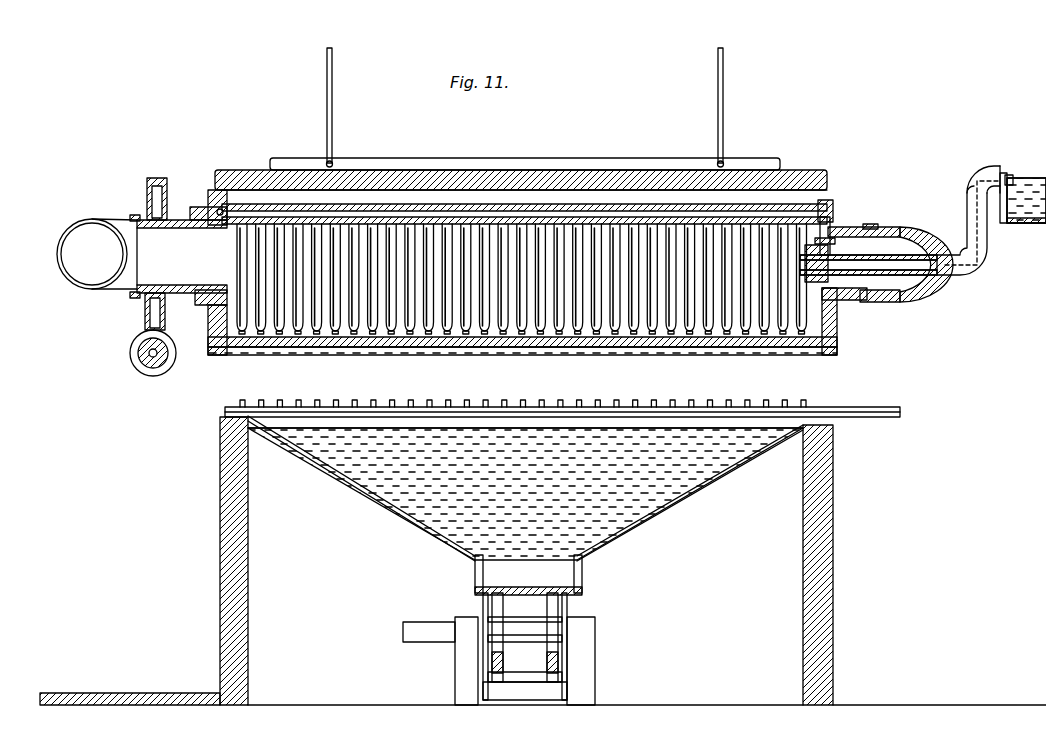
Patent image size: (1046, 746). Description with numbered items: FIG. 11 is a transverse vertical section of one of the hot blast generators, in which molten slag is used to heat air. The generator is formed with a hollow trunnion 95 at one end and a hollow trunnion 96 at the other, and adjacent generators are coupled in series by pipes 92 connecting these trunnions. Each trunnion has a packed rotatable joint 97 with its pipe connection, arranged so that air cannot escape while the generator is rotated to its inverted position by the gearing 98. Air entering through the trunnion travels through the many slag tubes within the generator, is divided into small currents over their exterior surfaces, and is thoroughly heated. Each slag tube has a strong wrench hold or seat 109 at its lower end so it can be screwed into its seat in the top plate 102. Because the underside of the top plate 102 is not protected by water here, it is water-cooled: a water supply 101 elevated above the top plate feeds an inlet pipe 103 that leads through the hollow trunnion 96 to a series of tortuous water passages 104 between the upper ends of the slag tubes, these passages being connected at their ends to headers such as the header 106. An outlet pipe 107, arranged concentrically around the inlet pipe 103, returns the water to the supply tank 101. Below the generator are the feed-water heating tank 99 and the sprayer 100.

The pipe 92 is at (925, 236).
The hollow trunnion 95 is at (184, 222).
The hollow trunnion 96 is at (852, 229).
The packed rotatable joint 97 is at (140, 215).
The gearing 98 is at (130, 348).
The feed-water heating tank 99 is at (660, 511).
The sprayer 100 is at (850, 416).
The water supply 101 is at (1033, 212).
The top plate 102 is at (542, 209).
The inlet pipe 103 is at (917, 272).
The tortuous water passages 104 is at (438, 221).
The header 106 is at (218, 207).
The outlet pipe 107 is at (905, 254).
The wrench hold or seat 109 is at (790, 346).